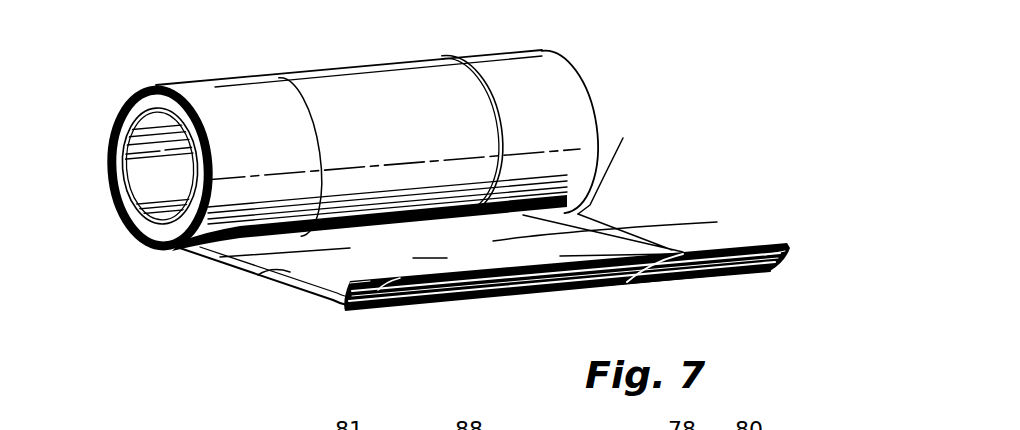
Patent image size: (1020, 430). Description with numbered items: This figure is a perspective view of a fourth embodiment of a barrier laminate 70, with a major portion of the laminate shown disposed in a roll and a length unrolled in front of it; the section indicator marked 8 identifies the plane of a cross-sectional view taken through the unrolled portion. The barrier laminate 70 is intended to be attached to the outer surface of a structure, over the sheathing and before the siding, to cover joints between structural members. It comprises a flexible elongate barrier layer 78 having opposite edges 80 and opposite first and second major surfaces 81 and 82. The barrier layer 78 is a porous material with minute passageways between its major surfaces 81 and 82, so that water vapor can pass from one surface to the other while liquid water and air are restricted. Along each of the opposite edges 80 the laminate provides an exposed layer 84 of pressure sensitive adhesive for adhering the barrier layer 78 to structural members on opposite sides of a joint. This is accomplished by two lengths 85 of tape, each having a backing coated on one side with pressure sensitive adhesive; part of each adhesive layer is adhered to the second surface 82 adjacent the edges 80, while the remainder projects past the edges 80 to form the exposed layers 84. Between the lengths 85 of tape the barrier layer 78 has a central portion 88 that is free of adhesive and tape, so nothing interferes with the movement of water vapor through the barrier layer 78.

The barrier laminate 70 is at (690, 132).
The barrier layer 78 is at (543, 292).
The opposite edges 80 is at (312, 300).
The first major surface 81 is at (611, 164).
The second major surface 82 is at (518, 291).
The exposed layer of pressure sensitive adhesive 84 is at (250, 277).
The lengths of tape 85 is at (463, 283).
The central portion 88 is at (430, 246).
The section line 8- 8 is at (167, 276).